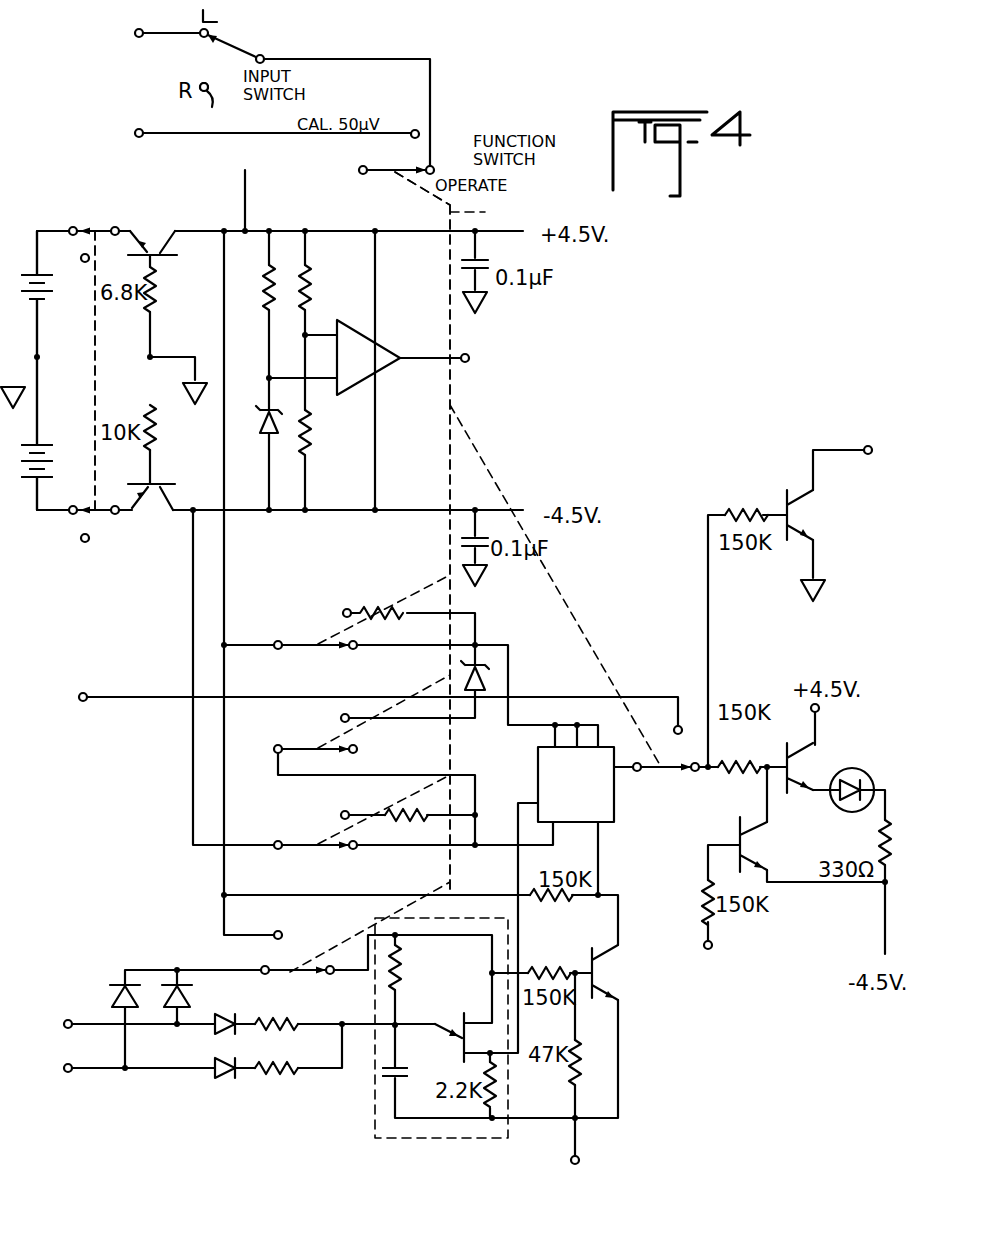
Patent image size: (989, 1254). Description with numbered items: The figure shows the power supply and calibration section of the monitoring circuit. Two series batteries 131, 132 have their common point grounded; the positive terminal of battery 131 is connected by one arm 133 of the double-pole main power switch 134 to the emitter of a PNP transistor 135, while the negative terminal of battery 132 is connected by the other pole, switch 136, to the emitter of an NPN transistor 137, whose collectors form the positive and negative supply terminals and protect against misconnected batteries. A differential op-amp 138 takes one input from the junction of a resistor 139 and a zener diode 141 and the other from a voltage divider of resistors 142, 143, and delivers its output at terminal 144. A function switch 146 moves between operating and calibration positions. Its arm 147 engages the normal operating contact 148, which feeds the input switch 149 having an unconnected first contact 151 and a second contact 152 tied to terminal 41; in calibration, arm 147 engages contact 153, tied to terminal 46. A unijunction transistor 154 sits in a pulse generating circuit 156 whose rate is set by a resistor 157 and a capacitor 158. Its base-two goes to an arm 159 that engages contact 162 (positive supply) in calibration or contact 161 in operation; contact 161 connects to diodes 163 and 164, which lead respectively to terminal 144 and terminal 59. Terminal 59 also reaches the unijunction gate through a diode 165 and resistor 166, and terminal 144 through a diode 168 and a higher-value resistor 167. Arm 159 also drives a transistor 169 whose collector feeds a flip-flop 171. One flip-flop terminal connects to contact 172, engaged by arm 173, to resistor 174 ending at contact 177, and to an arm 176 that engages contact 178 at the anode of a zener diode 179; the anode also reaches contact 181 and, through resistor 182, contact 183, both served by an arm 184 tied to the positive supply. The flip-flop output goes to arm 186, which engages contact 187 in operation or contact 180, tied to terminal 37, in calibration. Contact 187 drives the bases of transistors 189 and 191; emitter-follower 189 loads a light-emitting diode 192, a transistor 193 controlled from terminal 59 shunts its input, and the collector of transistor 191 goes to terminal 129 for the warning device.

The terminal 37 is at (90, 680).
The terminal 41 is at (142, 29).
The terminal 46 is at (136, 136).
The terminal 59 is at (708, 949).
The terminal 129 is at (866, 447).
The battery 131 is at (44, 312).
The battery 132 is at (43, 470).
The switch arm 133 is at (95, 228).
The main power switch 134 is at (97, 365).
The PNP transistor 135 is at (160, 258).
The switch 136 is at (100, 515).
The NPN transistor 137 is at (163, 487).
The differential op-amp 138 is at (391, 352).
The resistor 139 is at (266, 295).
The zener diode 141 is at (262, 447).
The resistor 142 is at (313, 275).
The resistor 143 is at (314, 432).
The output terminal 144 is at (476, 358).
The function switch 146 is at (453, 210).
The switch arm 147 is at (380, 173).
The normal operating contact 148 is at (433, 168).
The input switch 149 is at (264, 56).
The first contact 151 is at (226, 109).
The second contact 152 is at (212, 32).
The contact 153 is at (412, 138).
The unijunction transistor 154 is at (452, 1022).
The pulse generating circuit 156 is at (476, 917).
The resistor 157 is at (400, 960).
The capacitor 158 is at (404, 1072).
The switch arm 159 is at (329, 967).
The contact 161 is at (272, 962).
The contact 162 is at (288, 925).
The diode 163 is at (110, 1000).
The diode 164 is at (190, 998).
The diode 165 is at (215, 1031).
The resistor 166 is at (278, 1015).
The resistor 167 is at (278, 1075).
The diode 168 is at (227, 1080).
The transistor 169 is at (590, 943).
The flip-flop 171 is at (614, 825).
The contact 172 is at (355, 848).
The switch arm 173 is at (298, 848).
The resistor 174 is at (408, 805).
The switch arm 176 is at (290, 745).
The contact 177 is at (341, 815).
The contact 178 is at (341, 718).
The zener diode 179 is at (485, 684).
The contact 180 is at (674, 733).
The contact 181 is at (355, 648).
The resistor 182 is at (395, 618).
The contact 183 is at (348, 611).
The switch arm 184 is at (298, 647).
The switch arm 186 is at (655, 771).
The contact 187 is at (697, 772).
The transistor 189 is at (785, 754).
The transistor 191 is at (785, 508).
The light-emitting diode 192 is at (876, 760).
The transistor 193 is at (755, 835).